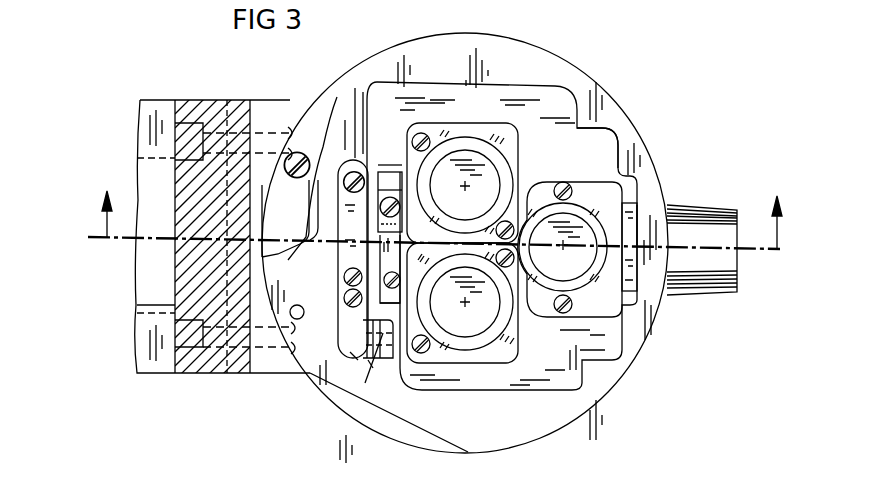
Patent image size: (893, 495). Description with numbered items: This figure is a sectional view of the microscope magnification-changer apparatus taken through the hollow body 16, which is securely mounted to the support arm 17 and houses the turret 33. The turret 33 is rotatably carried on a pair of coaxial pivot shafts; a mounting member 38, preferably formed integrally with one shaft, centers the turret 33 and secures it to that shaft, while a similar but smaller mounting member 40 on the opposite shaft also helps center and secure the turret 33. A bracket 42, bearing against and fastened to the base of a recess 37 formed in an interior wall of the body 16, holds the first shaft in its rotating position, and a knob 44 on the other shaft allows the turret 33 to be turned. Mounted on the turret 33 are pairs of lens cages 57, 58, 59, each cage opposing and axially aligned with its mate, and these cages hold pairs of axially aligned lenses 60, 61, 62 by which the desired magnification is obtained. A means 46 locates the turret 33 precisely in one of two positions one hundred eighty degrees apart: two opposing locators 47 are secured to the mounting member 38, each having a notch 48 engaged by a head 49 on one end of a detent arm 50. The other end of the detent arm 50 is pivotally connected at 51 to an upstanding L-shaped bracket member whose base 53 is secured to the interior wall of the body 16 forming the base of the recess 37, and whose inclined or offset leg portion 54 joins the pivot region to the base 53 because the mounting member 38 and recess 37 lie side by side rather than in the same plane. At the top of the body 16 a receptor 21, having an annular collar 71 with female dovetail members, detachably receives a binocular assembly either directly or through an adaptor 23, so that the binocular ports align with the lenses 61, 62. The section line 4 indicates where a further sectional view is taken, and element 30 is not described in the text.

The section line 4- 4 is at (435, 207).
The hollow body 16 is at (605, 372).
The support arm 17 is at (206, 370).
The receptor 21 is at (316, 147).
The adaptor 23 is at (309, 226).
The housing block 30 is at (156, 372).
The turret 33 is at (613, 172).
The recess 37 is at (335, 386).
The mounting member 38 is at (392, 172).
The mounting member 40 is at (630, 233).
The bracket 42 is at (340, 250).
The knob 44 is at (708, 296).
The means for locating turret 46 is at (380, 148).
The locator 47 is at (296, 262).
The notch 48 is at (406, 262).
The head 49 is at (340, 290).
The detent arm 50 is at (350, 320).
The pivotal connection 51 is at (373, 378).
The base 53 is at (383, 302).
The leg portion 54 is at (357, 353).
The lens cage 57 is at (592, 300).
The lens cage 58 is at (490, 347).
The lens cage 59 is at (553, 86).
The lens 60 is at (570, 249).
The lens 61 is at (462, 303).
The lens 62 is at (462, 183).
The annular collar 71 is at (337, 97).